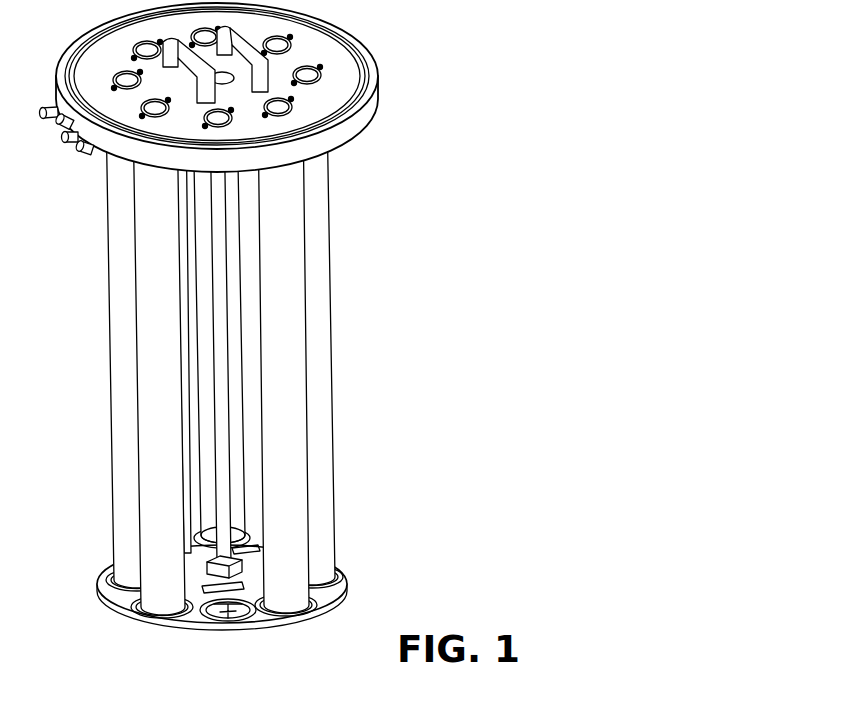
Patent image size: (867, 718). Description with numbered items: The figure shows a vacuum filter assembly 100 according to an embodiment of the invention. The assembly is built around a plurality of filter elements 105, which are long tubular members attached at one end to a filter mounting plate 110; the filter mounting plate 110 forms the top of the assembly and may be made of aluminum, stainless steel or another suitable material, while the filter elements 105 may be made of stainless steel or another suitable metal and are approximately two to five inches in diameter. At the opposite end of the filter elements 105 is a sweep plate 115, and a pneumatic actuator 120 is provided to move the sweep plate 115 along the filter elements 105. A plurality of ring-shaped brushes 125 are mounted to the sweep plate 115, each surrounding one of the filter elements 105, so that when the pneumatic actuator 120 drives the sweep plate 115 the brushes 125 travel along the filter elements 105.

The vacuum filter assembly 100 is at (278, 334).
The filter elements 105 is at (252, 370).
The filter mounting plate 110 is at (382, 99).
The sweep plate 115 is at (334, 609).
The pneumatic actuator 120 is at (198, 566).
The ring-shaped brushes 125 is at (322, 596).